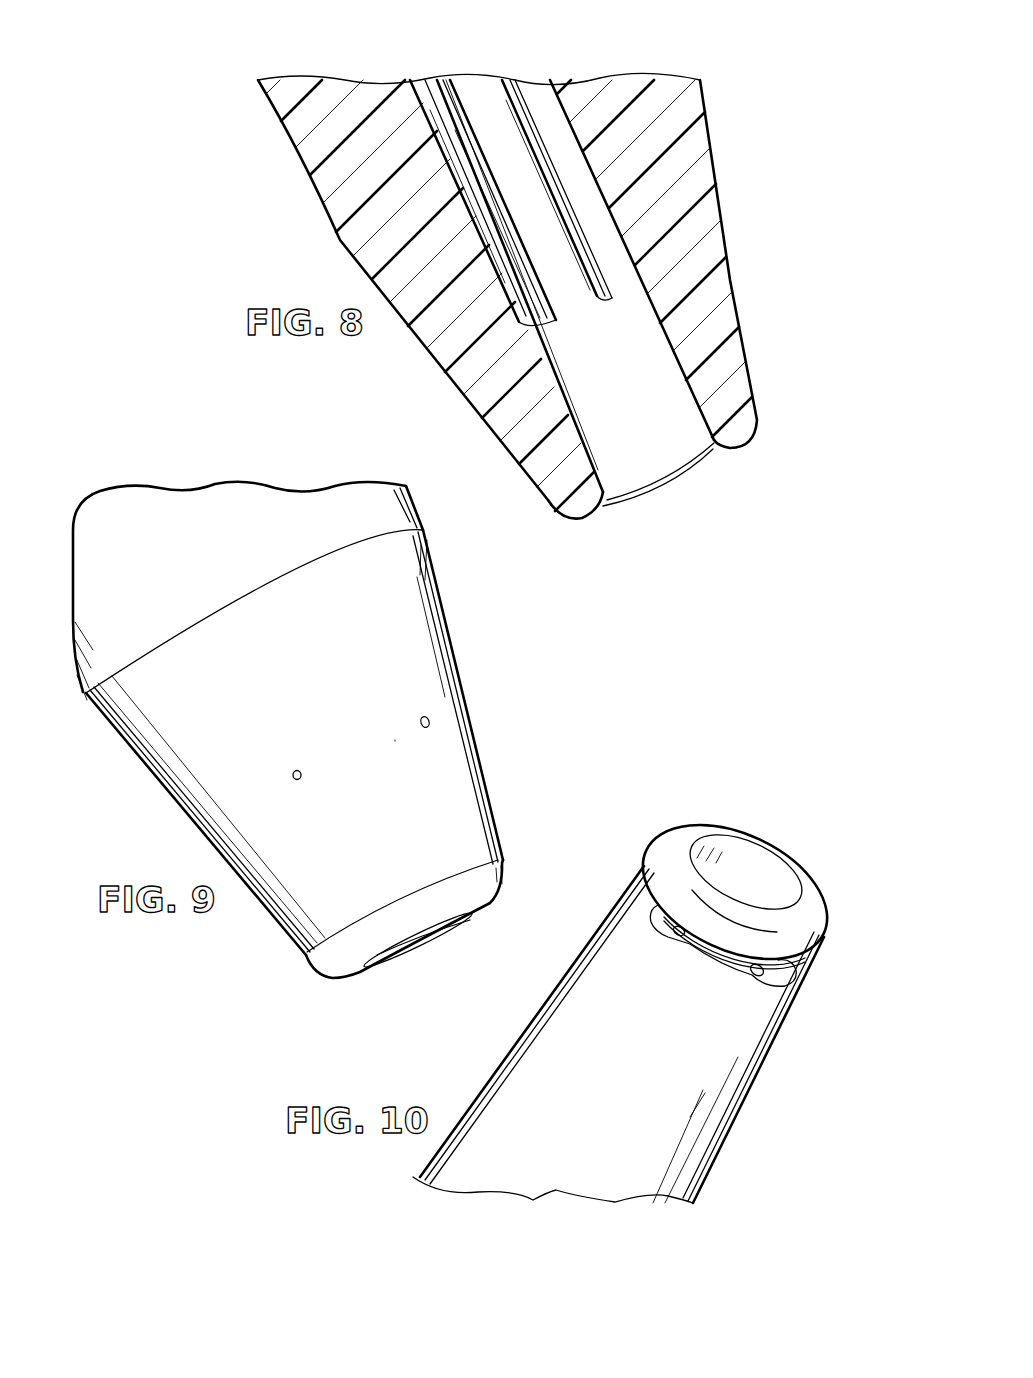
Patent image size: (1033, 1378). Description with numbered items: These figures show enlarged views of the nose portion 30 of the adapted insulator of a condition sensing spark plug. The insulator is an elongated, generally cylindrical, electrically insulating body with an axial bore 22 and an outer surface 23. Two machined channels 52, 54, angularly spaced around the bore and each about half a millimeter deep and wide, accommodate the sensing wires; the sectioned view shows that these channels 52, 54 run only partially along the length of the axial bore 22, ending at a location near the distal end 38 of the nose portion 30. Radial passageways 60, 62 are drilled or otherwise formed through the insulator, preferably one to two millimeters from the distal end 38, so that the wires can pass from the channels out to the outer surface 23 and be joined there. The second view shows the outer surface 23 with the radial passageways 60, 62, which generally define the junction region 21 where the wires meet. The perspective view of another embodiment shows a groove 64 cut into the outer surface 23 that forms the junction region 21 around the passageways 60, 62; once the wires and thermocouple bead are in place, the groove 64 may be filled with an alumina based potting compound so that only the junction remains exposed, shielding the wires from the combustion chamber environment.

In FIG. 9, the junction region 21 is at (365, 748).
In FIG. 10, the junction region 21 is at (694, 941).
In FIG. 8, the axial bore 22 is at (617, 468).
In FIG. 8, the outer surface 23 is at (663, 98).
In FIG. 9, the outer surface 23 is at (322, 510).
In FIG. 10, the outer surface 23 is at (555, 1168).
In FIG. 8, the nose portion 30 is at (744, 313).
In FIG. 9, the nose portion 30 is at (452, 617).
In FIG. 10, the nose portion 30 is at (613, 884).
In FIG. 8, the distal end 38 is at (737, 449).
In FIG. 10, the distal end 38 is at (773, 845).
In FIG. 8, the channel 52 is at (432, 82).
In FIG. 8, the channel 54 is at (506, 82).
In FIG. 8, the radial passageway 60 is at (548, 323).
In FIG. 9, the radial passageway 60 is at (428, 727).
In FIG. 10, the radial passageway 60 is at (672, 931).
In FIG. 8, the radial passageway 62 is at (604, 298).
In FIG. 9, the radial passageway 62 is at (296, 780).
In FIG. 10, the radial passageway 62 is at (762, 976).
In FIG. 10, the groove 64 is at (723, 964).